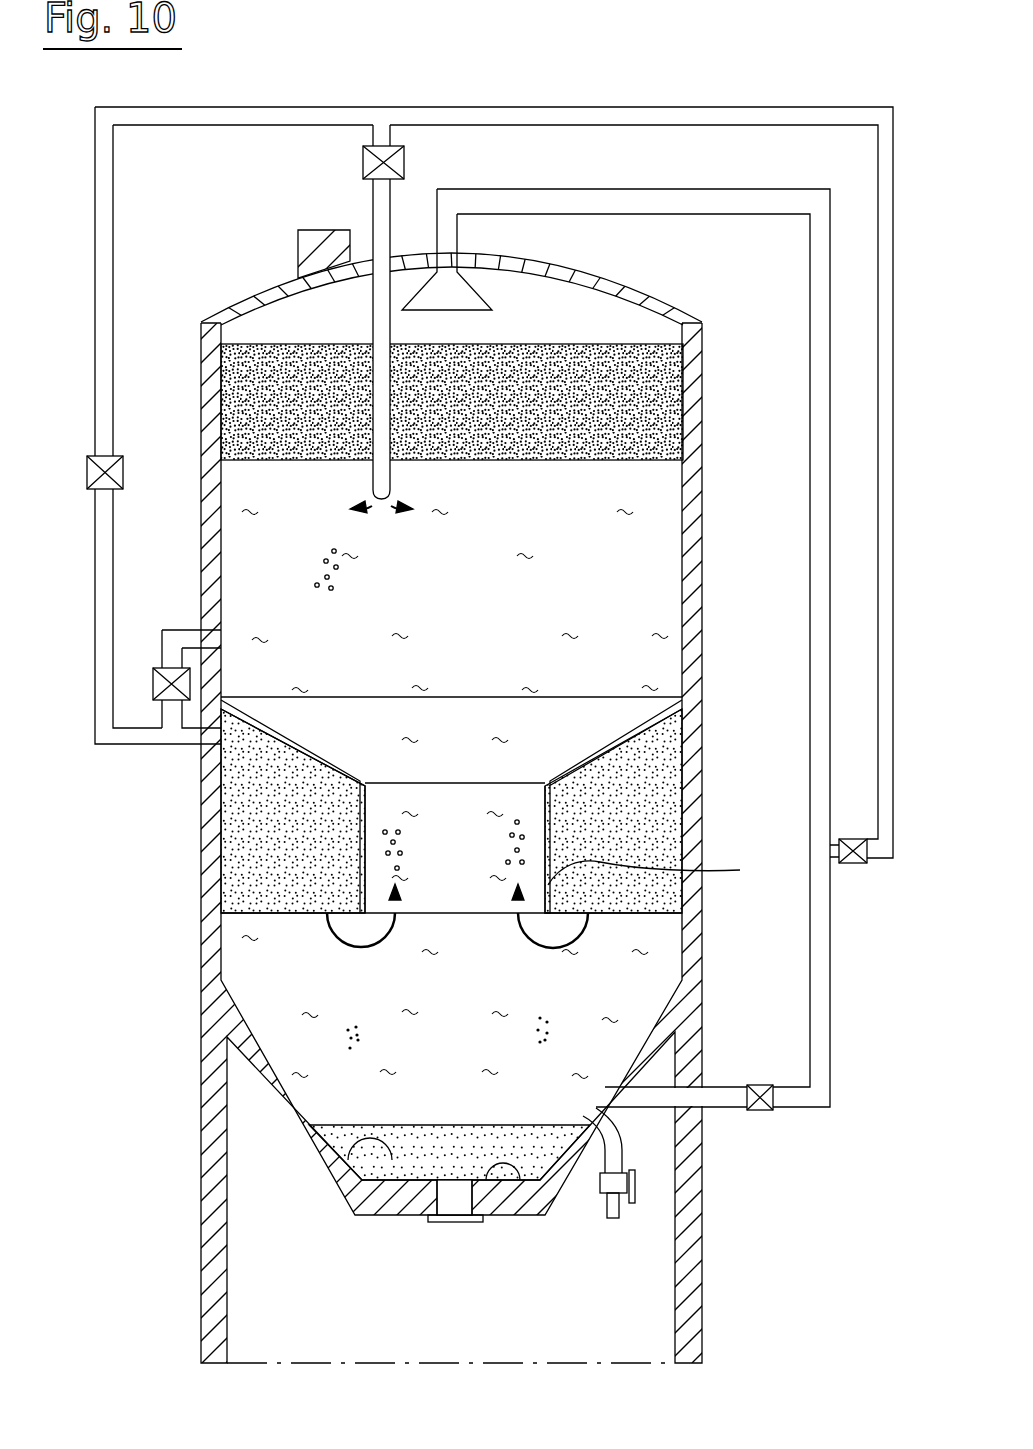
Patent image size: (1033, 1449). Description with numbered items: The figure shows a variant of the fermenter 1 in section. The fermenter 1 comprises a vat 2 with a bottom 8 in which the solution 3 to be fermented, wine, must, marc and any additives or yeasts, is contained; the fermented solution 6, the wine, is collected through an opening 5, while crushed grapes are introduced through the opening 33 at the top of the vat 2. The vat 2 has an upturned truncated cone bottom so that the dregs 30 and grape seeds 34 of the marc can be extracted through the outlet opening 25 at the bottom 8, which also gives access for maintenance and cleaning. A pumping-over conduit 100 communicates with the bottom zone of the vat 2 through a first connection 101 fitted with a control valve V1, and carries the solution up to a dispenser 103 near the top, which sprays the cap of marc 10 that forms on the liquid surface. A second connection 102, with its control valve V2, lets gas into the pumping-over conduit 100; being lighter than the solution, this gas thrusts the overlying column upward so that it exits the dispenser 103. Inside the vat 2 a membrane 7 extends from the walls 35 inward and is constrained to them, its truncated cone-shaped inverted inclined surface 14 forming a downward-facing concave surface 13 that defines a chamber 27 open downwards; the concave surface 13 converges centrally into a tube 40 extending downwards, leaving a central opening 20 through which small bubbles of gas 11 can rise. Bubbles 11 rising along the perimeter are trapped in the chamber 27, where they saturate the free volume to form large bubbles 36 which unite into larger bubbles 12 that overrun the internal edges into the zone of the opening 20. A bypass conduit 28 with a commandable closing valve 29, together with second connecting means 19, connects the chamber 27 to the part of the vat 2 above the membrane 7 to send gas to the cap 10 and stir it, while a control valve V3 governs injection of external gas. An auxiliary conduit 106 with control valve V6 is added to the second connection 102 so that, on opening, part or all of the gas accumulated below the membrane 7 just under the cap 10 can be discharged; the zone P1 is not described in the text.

The fermenter 1 is at (812, 74).
The vat 2 is at (207, 1036).
The solution to be fermented 3 is at (456, 1036).
The opening for collecting the fermented solution 5 is at (601, 1192).
The fermented solution 6 is at (456, 612).
The membrane 7 is at (599, 728).
The bottom 8 is at (490, 1184).
The cap of marc 10 is at (465, 420).
The small bubbles of gas 11 is at (355, 1040).
The larger bubbles 12 is at (325, 577).
The concave surface 13 is at (248, 746).
The truncated cone-shaped inverted inclined surface 14 is at (634, 716).
The second connecting means 19 is at (145, 638).
The opening 20 is at (470, 854).
The outlet opening 25 is at (445, 1224).
The chamber 27 is at (658, 752).
The bypass conduit 28 is at (192, 630).
The commandable closing valve 29 is at (156, 684).
The dregs 30 is at (592, 1112).
The opening at the top of the vat 33 is at (342, 230).
The grape seeds 34 is at (350, 1150).
The walls 35 is at (690, 516).
The large bubbles 36 is at (640, 835).
The tube 40 is at (663, 870).
The pumping-over conduit 100 is at (796, 294).
The first connection 101 is at (738, 1122).
The second connection 102 is at (864, 186).
The dispenser 103 is at (470, 278).
The auxiliary conduit 106 is at (358, 332).
The filter media zone P1 is at (268, 795).
The control valve V1 is at (766, 1084).
The control valve V2 is at (855, 882).
The control valve V3 is at (94, 442).
The control valve V6 is at (428, 161).